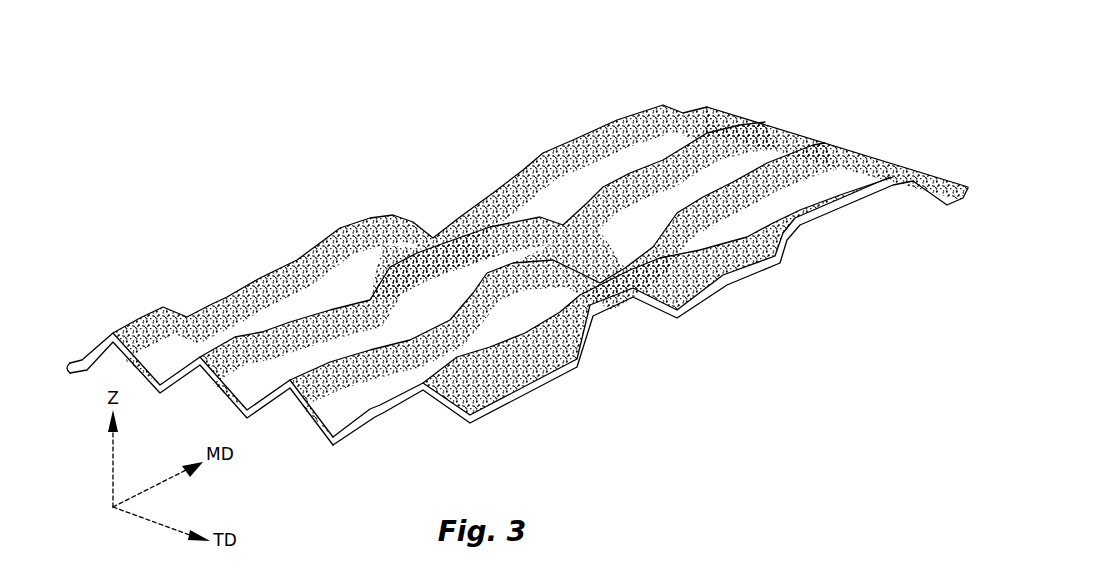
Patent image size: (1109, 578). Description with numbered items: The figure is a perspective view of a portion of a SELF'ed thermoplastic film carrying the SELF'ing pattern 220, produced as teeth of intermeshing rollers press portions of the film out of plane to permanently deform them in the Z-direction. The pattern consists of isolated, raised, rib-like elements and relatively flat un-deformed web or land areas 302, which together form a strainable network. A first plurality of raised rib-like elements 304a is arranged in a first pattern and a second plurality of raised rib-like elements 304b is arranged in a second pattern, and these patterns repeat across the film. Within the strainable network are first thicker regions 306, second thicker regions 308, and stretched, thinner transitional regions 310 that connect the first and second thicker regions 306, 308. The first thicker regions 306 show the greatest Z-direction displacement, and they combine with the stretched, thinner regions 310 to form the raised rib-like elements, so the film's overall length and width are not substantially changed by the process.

The SELF'ing pattern 220 is at (526, 242).
The un-deformed web area 302 is at (258, 288).
The first plurality of raised rib-like elements 304a is at (585, 143).
The second plurality of raised rib-like elements 304b is at (360, 230).
The first thicker region 306 is at (745, 135).
The second thicker region 308 is at (795, 158).
The stretched, thinner transitional region 310 is at (750, 155).